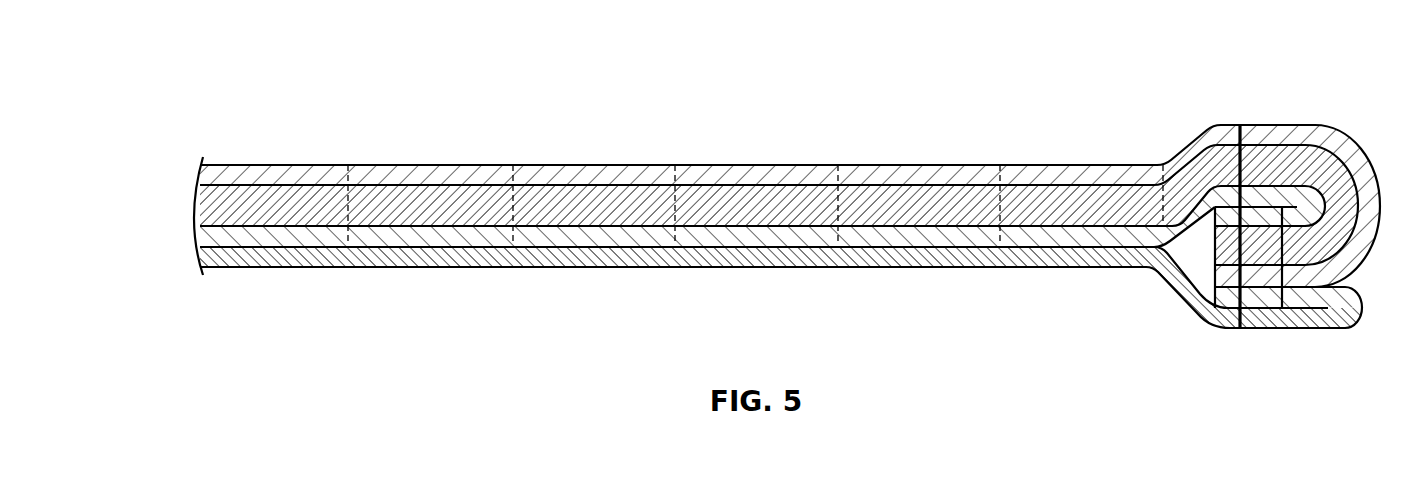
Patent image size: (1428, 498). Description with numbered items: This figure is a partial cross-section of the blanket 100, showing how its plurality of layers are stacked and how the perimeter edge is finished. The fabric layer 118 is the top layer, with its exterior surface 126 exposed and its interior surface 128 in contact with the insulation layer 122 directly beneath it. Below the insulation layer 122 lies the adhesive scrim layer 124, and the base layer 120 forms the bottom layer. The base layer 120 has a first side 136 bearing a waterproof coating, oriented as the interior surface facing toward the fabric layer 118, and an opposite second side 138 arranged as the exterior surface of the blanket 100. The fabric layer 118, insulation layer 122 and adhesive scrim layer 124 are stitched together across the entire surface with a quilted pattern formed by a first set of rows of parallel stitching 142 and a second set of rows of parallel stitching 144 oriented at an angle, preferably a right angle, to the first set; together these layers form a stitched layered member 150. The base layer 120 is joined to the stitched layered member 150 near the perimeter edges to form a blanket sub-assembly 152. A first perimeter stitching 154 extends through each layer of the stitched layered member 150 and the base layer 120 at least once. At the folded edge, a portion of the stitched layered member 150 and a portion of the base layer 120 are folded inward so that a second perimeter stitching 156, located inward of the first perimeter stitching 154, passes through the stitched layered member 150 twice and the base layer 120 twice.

The blanket 100 is at (231, 110).
The fabric layer 118 is at (865, 175).
The base layer 120 is at (708, 252).
The insulation layer 122 is at (278, 203).
The adhesive scrim layer 124 is at (423, 238).
The exterior surface 126 is at (605, 165).
The interior surface 128 is at (957, 188).
The first side 136 is at (588, 265).
The second side 138 is at (1045, 245).
The first set of rows of parallel stitching 142 is at (837, 208).
The second set of rows of parallel stitching 144 is at (1000, 177).
The stitched layered member 150 is at (923, 198).
The blanket sub-assembly 152 is at (417, 198).
The first perimeter stitching 154 is at (1283, 297).
The second perimeter stitching 156 is at (1237, 277).